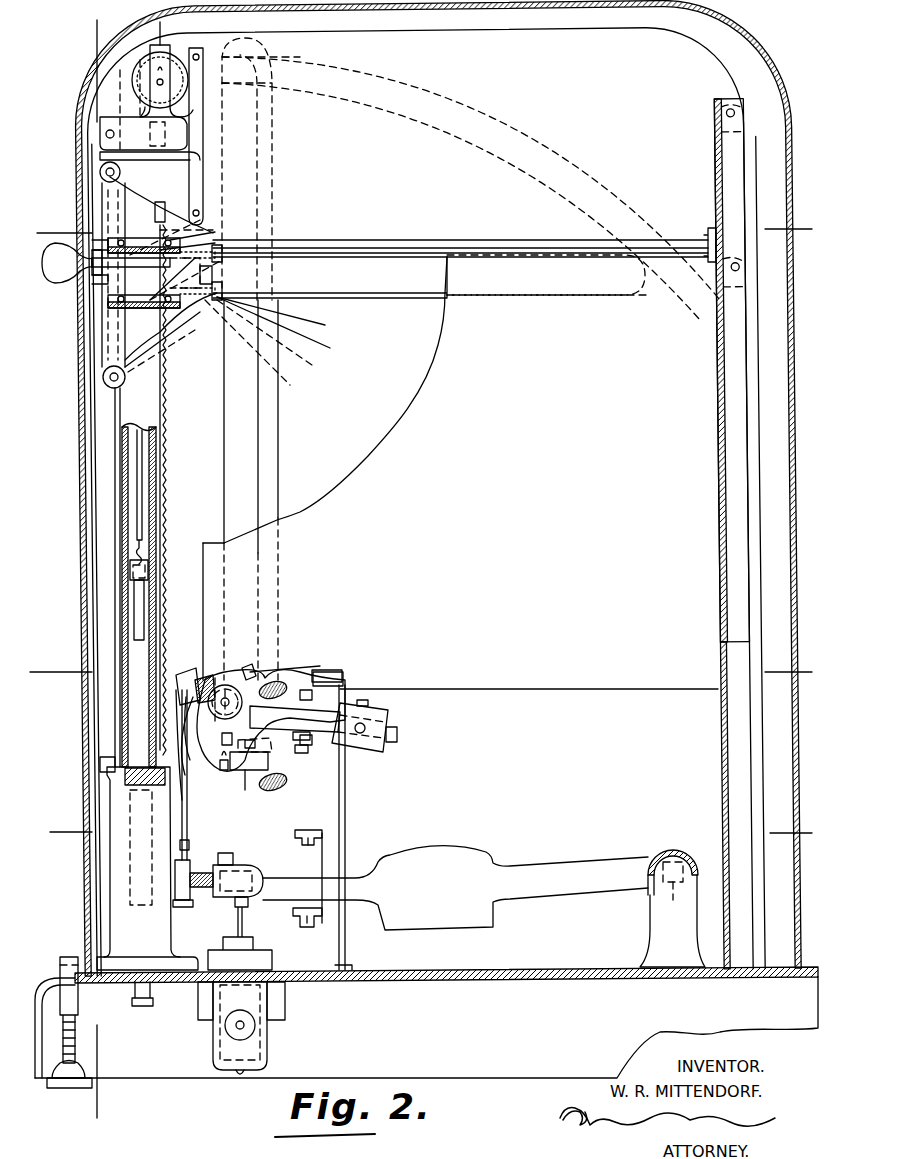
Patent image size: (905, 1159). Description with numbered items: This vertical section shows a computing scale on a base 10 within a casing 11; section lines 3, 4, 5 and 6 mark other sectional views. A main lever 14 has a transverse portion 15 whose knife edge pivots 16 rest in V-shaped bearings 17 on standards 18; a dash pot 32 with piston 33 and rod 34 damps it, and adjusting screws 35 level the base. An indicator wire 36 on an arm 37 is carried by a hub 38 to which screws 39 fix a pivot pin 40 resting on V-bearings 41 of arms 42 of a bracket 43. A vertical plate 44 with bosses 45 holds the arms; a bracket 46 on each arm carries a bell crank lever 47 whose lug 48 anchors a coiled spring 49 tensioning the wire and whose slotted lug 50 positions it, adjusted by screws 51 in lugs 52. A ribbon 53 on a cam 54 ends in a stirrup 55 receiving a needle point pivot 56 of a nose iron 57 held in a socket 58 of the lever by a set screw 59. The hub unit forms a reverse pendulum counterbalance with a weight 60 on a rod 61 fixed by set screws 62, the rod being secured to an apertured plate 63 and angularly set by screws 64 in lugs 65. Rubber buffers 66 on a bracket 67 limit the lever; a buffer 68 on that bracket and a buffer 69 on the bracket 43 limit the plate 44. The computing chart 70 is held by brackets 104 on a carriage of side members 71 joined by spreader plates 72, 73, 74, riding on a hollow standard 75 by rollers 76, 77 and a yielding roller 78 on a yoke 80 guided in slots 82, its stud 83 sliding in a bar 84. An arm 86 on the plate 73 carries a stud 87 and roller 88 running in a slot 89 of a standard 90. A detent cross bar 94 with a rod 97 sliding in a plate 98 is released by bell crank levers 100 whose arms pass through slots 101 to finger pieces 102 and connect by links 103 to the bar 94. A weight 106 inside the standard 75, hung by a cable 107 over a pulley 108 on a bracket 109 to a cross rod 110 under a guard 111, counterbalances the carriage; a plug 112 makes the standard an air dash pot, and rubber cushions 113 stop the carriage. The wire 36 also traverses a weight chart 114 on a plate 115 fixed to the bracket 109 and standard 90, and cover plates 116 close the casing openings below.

The section line 3— 3 is at (106, 568).
The section line 4— 4 is at (431, 823).
The section line 5— 5 is at (423, 657).
The section line 6— 6 is at (424, 216).
The base 10 is at (510, 968).
The casing 11 is at (600, 8).
The main lever 14 is at (528, 872).
The transverse portion 15 is at (690, 834).
The knife edge pivots 16 is at (655, 860).
The V-shaped bearings 17 is at (680, 899).
The standards 18 is at (650, 922).
The dash pot 32 is at (256, 1025).
The piston 33 is at (240, 1052).
The rod 34 is at (242, 920).
The adjusting screws 35 is at (78, 1032).
The wire 36 is at (224, 400).
The arm 37 is at (268, 422).
The hub 38 is at (290, 672).
The screws 39 is at (262, 668).
The pivot pin 40 is at (218, 692).
The V-bearings 41 is at (210, 745).
The arms 42 is at (186, 730).
The bracket 43 is at (110, 810).
The vertical plate 44 is at (312, 692).
The studs or bosses 45 is at (283, 685).
The bracket 46 is at (262, 750).
The bell crank lever 47 is at (222, 768).
The lug 48 is at (238, 772).
The coiled spring 49 is at (225, 770).
The lug 50 is at (232, 736).
The screws 51 is at (247, 792).
The lugs 52 is at (256, 744).
The metal ribbon or tape 53 is at (182, 838).
The cam 54 is at (192, 720).
The stirrup 55 is at (190, 866).
The needle point pivot 56 is at (193, 904).
The nose iron 57 is at (205, 880).
The socket 58 is at (262, 870).
The set screw 59 is at (234, 856).
The weight 60 is at (385, 712).
The rod 61 is at (398, 732).
The set screws 62 is at (343, 688).
The annular member or apertured plate 63 is at (248, 666).
The screws 64 is at (340, 668).
The lugs 65 is at (360, 690).
The rubber buffers 66 is at (308, 830).
The bracket 67 is at (345, 862).
The rubber buffer 68 is at (345, 676).
The rubber buffer 69 is at (148, 785).
The computing chart 70 is at (410, 298).
The side members 71 is at (170, 345).
The spreader plate 72 is at (170, 365).
The spreader plate 73 is at (160, 202).
The spreader plate 74 is at (195, 315).
The standard 75 is at (122, 518).
The roller 76 is at (100, 174).
The roller 77 is at (103, 378).
The third roller 78 is at (256, 344).
The yoke 80 is at (275, 336).
The slots 82 is at (104, 335).
The stud 83 is at (282, 315).
The bar 84 is at (286, 327).
The arm 86 is at (443, 242).
The stud 87 is at (690, 262).
The roller 88 is at (708, 242).
The slot 89 is at (716, 392).
The standard 90 is at (720, 725).
The cross bar 94 is at (190, 264).
The rod 97 is at (222, 254).
The plate 98 is at (212, 262).
The bell crank levers 100 is at (78, 276).
The vertical slot 101 is at (92, 590).
The finger pieces 102 is at (96, 280).
The links 103 is at (112, 302).
The bracket 104 is at (225, 240).
The weight 106 is at (148, 600).
The cable 107 is at (138, 460).
The pulley 108 is at (172, 68).
The bracket 109 is at (135, 128).
The cross rod 110 is at (170, 220).
The guard 111 is at (160, 45).
The plug 112 is at (150, 985).
The rubber cushions 113 is at (100, 156).
The weight chart 114 is at (572, 155).
The plate 115 is at (423, 185).
The cover plates 116 is at (555, 670).